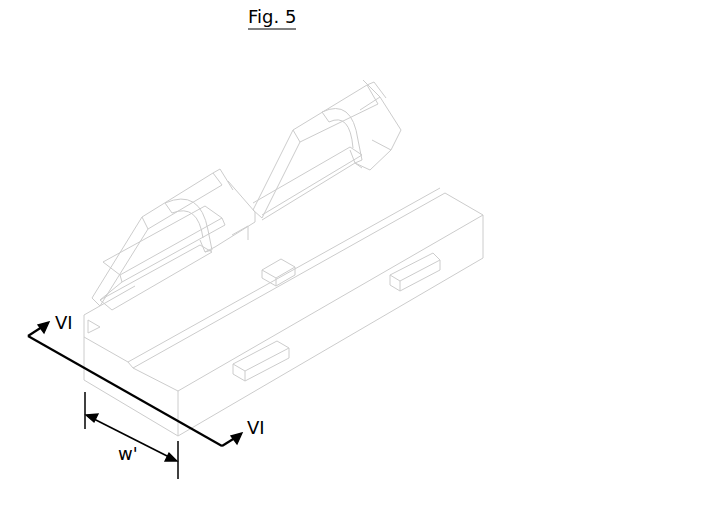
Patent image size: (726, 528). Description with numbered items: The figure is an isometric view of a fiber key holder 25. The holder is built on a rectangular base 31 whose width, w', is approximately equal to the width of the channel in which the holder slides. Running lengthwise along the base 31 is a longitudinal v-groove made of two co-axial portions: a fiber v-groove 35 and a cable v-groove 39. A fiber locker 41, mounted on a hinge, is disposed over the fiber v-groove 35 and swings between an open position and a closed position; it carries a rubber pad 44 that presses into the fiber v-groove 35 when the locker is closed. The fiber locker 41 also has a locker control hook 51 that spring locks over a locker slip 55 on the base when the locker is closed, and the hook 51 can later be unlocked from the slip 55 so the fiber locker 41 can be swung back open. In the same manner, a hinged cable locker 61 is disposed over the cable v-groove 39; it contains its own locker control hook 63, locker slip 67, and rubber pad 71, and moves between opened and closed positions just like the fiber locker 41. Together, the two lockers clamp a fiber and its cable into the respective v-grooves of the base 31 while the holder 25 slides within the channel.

The fiber key holder 25 is at (508, 225).
The rectangular base 31 is at (355, 338).
The fiber v-groove 35 is at (147, 356).
The cable v-groove 39 is at (415, 207).
The fiber locker 41 is at (140, 217).
The rubber pad 44 is at (145, 258).
The locker control hook 51 is at (212, 207).
The locker slip 55 is at (263, 371).
The cable locker 61 is at (295, 130).
The locker control hook 63 is at (371, 125).
The locker slip 67 is at (418, 282).
The rubber pad 71 is at (290, 165).